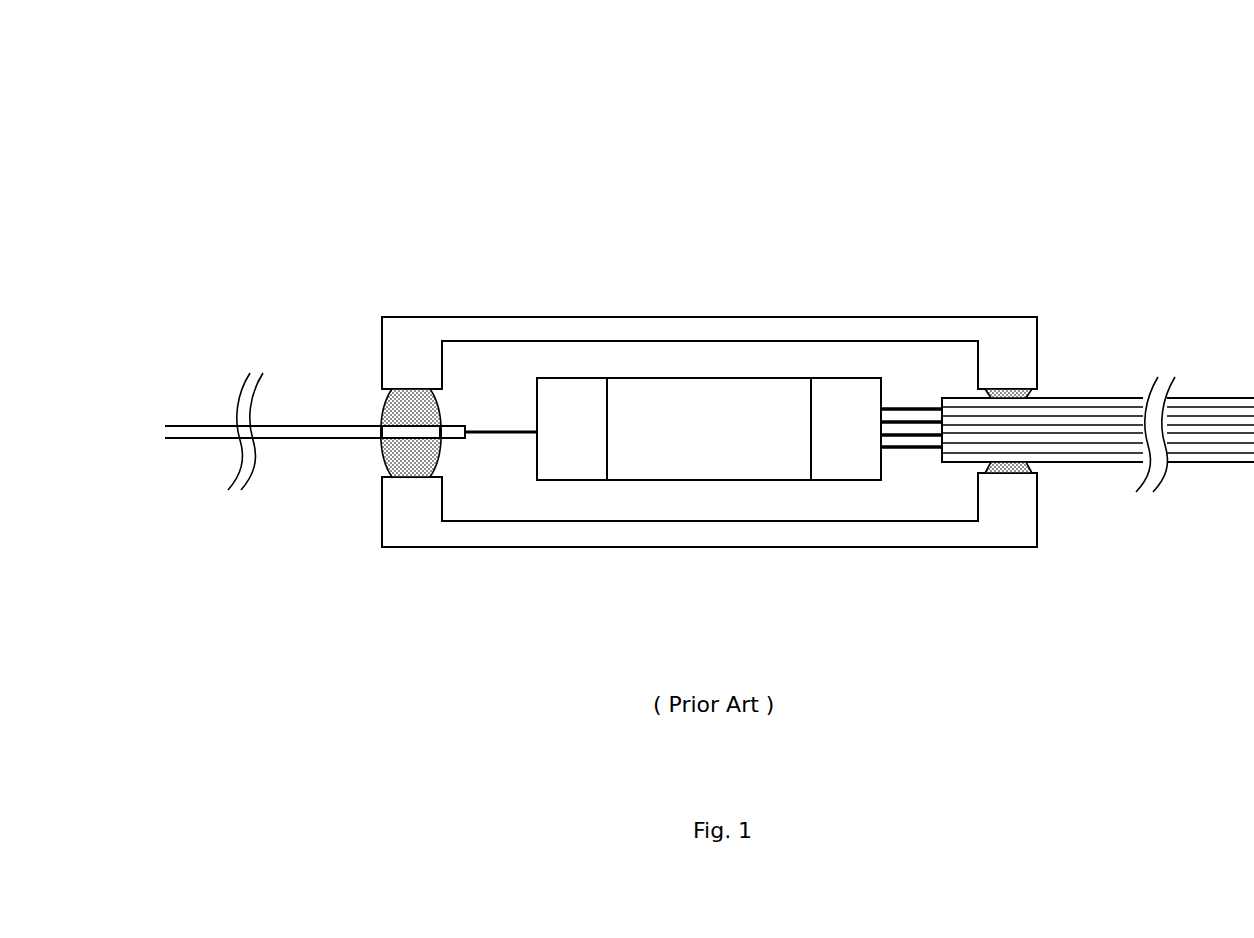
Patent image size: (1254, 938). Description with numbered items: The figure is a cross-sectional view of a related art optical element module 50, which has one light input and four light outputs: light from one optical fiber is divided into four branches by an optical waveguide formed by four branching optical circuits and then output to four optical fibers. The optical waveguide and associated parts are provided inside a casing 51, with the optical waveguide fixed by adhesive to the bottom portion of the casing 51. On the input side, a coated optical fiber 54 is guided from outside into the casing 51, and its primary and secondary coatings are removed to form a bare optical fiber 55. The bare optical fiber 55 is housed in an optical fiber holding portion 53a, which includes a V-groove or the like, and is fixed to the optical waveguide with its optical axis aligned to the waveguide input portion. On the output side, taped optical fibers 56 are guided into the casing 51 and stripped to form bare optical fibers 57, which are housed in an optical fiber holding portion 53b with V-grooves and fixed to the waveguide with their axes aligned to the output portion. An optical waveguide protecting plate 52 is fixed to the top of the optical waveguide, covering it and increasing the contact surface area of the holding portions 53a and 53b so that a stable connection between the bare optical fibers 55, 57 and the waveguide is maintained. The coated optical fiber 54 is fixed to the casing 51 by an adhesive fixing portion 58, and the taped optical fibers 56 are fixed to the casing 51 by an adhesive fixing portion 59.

The optical element module 50 is at (699, 193).
The casing 51 is at (776, 317).
The optical waveguide protecting plate 52 is at (678, 415).
The optical fiber holding portion 53a is at (560, 403).
The optical fiber holding portion 53b is at (842, 417).
The coated optical fiber 54 is at (203, 426).
The bare optical fiber 55 is at (488, 428).
The taped optical fibers 56 is at (1085, 398).
The bare optical fibers 57 is at (907, 411).
The adhesive fixing portion 58 is at (383, 460).
The adhesive fixing portion 59 is at (1033, 465).